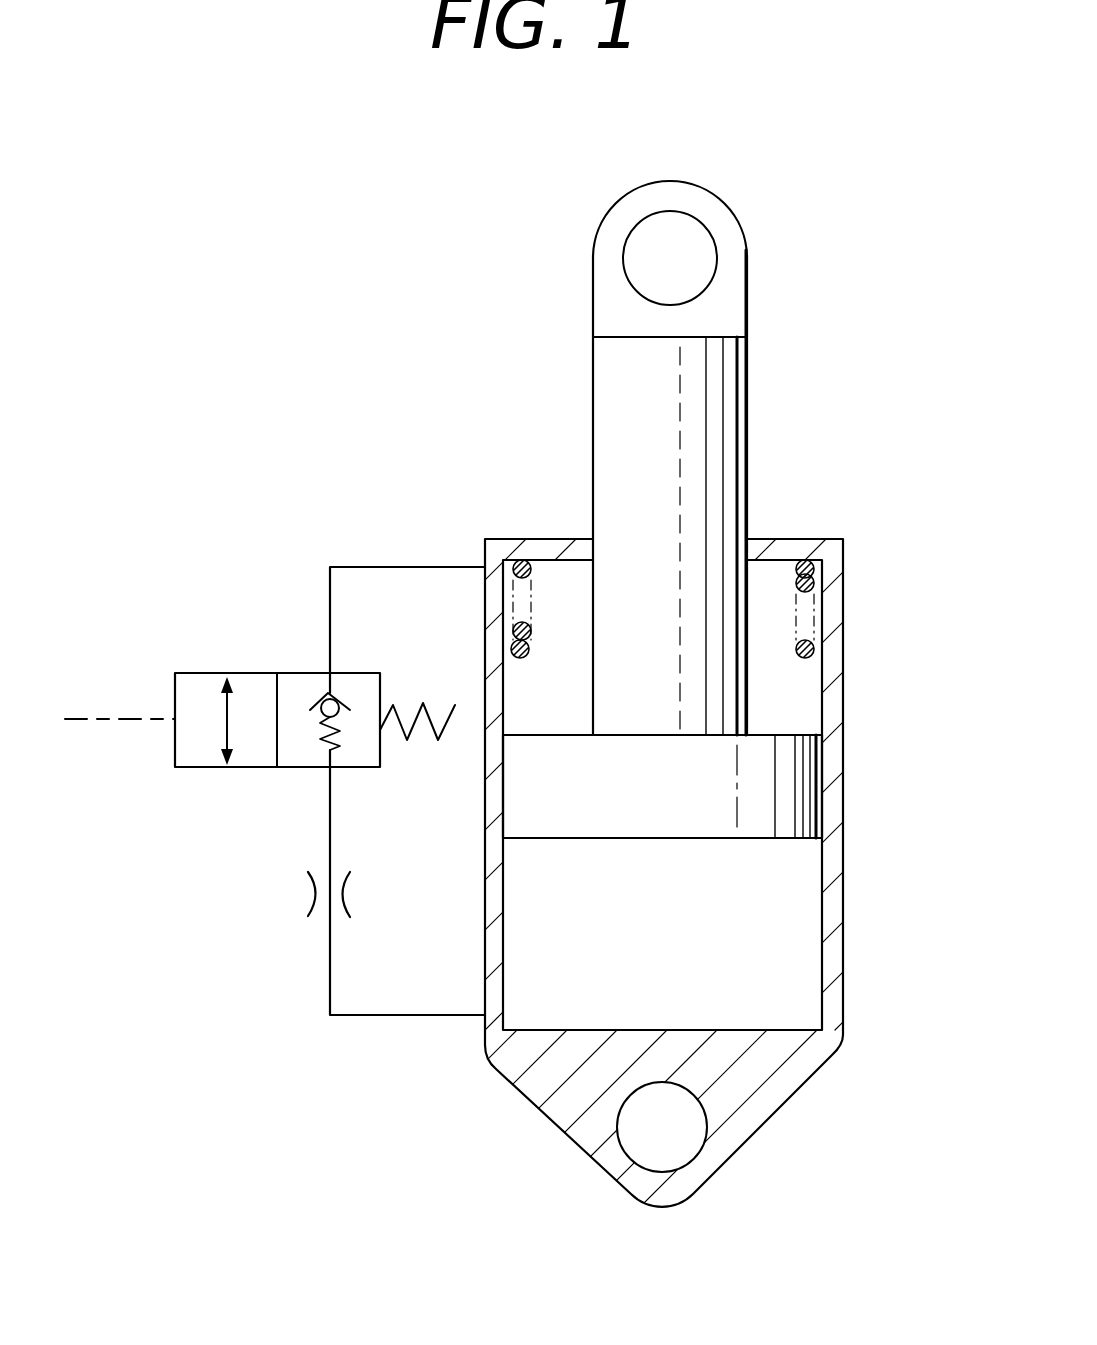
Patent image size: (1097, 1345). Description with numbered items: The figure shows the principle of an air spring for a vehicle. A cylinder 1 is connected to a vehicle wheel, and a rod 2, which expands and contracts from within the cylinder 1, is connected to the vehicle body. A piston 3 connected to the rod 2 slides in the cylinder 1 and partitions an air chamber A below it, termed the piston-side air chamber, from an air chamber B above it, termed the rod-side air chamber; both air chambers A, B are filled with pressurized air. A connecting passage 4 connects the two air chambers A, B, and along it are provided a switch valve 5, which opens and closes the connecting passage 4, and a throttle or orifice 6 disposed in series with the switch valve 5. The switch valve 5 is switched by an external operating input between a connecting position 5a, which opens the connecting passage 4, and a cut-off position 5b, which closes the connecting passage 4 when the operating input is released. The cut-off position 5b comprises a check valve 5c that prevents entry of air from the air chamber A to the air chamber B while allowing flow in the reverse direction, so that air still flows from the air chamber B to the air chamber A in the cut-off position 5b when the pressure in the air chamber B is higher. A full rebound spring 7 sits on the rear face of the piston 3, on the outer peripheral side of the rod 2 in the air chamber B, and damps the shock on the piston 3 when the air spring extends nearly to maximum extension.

The cylinder 1 is at (830, 893).
The rod 2 is at (740, 433).
The piston 3 is at (602, 807).
The connecting passage 4 is at (405, 567).
The switch valve 5 is at (260, 662).
The connecting position 5a is at (205, 765).
The cut-off position 5b is at (382, 723).
The check valve 5c is at (342, 702).
The throttle (orifice) 6 is at (308, 897).
The full rebound spring 7 is at (807, 572).
The air chamber A is at (653, 980).
The air chamber B is at (788, 693).